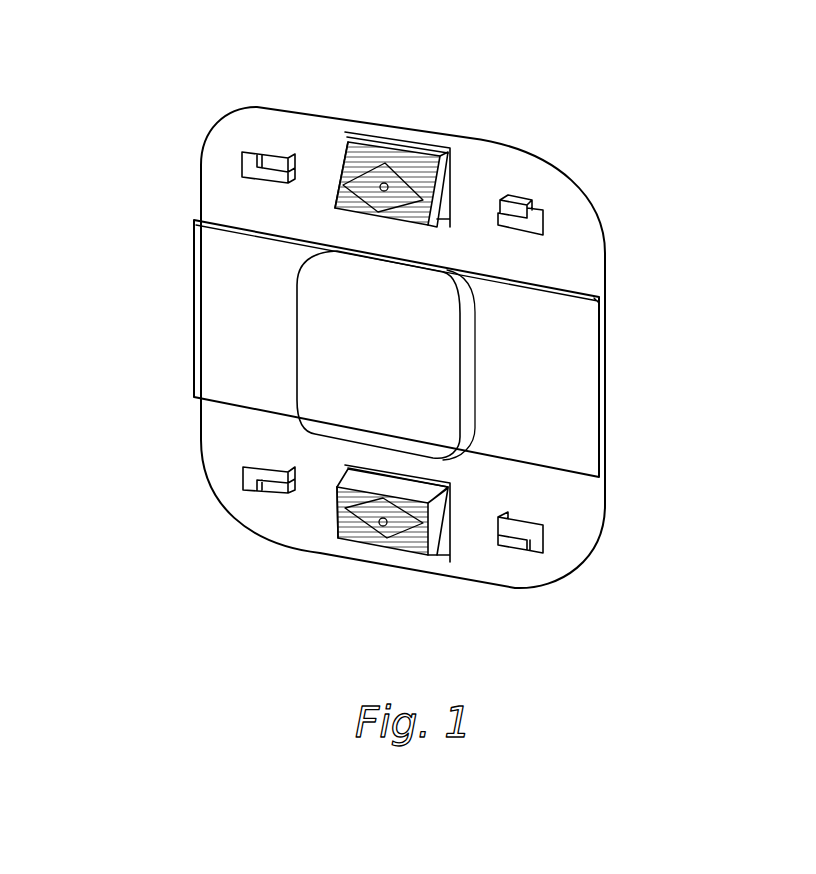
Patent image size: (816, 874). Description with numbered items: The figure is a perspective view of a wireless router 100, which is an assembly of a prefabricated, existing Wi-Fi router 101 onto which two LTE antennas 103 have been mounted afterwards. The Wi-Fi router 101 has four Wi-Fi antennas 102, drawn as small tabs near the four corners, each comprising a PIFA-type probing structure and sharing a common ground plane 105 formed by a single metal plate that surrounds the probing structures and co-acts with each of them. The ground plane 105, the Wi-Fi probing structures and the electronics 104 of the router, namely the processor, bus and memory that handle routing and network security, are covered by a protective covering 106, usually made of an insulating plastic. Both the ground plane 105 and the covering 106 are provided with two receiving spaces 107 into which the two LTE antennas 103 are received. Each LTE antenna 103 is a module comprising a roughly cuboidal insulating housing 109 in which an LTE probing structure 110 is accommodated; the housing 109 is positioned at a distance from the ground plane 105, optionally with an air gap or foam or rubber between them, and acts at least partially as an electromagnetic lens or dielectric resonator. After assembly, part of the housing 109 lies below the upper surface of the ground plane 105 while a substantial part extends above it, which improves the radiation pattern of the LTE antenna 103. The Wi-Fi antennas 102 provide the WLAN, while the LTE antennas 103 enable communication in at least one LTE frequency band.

The wireless router 100 is at (145, 57).
The Wi-Fi router 101 is at (184, 296).
The Wi-Fi antennas 102 is at (250, 165).
The LTE antennas 103 is at (330, 140).
The electronics 104 is at (404, 367).
The ground plane 105 is at (620, 376).
The protective covering 106 is at (572, 425).
The receiving spaces 107 is at (450, 148).
The insulating housing 109 is at (362, 160).
The LTE probing structure 110 is at (386, 183).